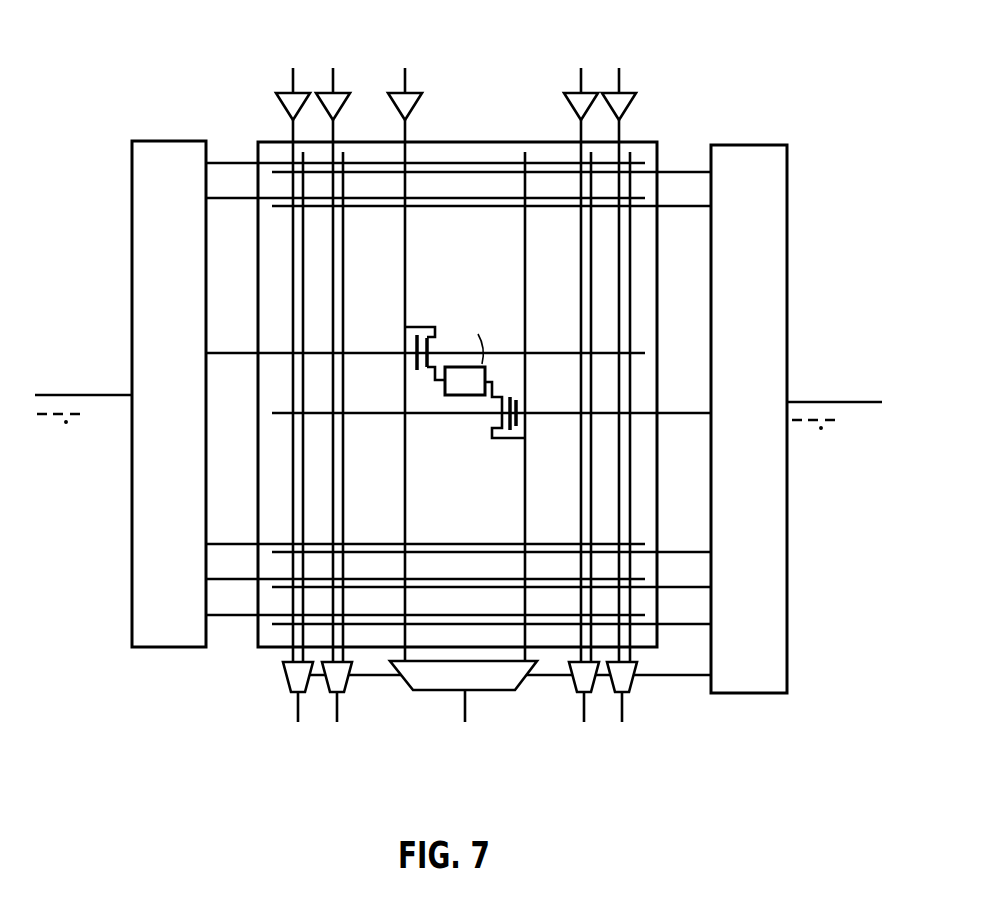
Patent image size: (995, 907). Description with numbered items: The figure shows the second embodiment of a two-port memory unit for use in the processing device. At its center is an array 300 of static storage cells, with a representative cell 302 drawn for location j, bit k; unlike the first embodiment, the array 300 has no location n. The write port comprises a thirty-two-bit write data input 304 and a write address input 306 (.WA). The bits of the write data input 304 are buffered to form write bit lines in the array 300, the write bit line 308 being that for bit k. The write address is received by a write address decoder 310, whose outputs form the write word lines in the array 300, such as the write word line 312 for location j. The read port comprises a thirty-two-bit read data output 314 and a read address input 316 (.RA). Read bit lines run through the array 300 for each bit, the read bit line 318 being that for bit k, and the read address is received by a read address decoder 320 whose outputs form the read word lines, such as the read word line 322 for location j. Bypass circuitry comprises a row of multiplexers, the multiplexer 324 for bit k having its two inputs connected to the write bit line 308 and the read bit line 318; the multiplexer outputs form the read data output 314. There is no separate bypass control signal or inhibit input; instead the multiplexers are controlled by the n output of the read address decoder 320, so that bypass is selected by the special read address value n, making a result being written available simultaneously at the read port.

The array 300 is at (259, 650).
The cell 302 is at (462, 396).
The write data input 304 is at (463, 77).
The write address input 306 is at (118, 392).
The write bit line 308 is at (404, 280).
The write address decoder 310 is at (132, 538).
The write word line 312 is at (364, 349).
The read data output 314 is at (469, 722).
The read address input 316 is at (793, 400).
The read bit line 318 is at (524, 476).
The read address decoder 320 is at (787, 525).
The read word line 322 is at (553, 415).
The multiplexer 324 is at (519, 688).